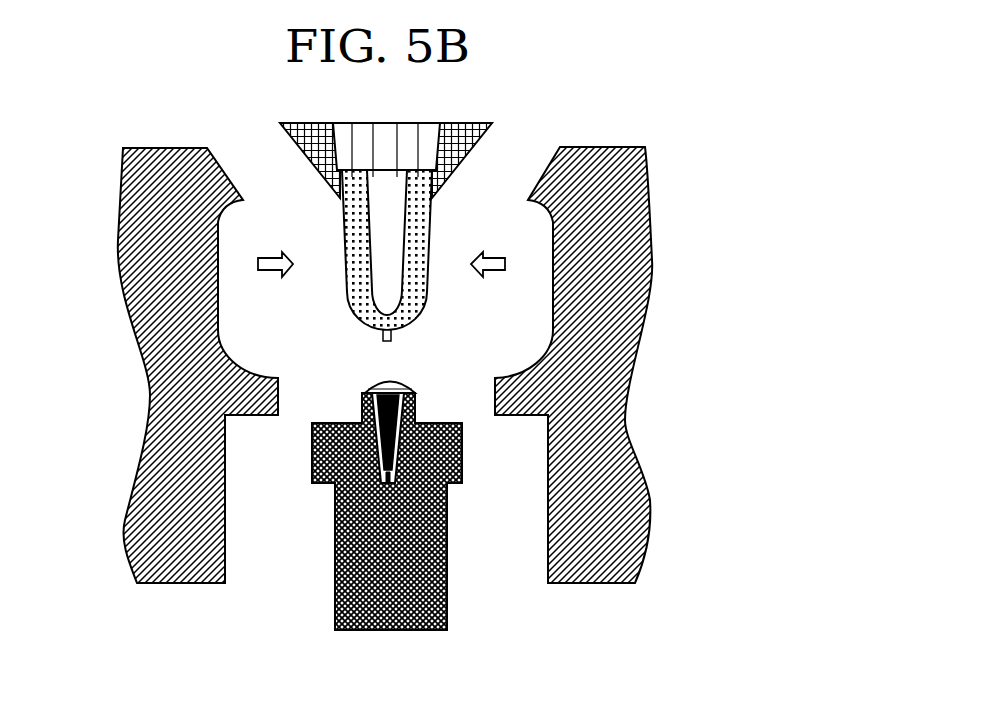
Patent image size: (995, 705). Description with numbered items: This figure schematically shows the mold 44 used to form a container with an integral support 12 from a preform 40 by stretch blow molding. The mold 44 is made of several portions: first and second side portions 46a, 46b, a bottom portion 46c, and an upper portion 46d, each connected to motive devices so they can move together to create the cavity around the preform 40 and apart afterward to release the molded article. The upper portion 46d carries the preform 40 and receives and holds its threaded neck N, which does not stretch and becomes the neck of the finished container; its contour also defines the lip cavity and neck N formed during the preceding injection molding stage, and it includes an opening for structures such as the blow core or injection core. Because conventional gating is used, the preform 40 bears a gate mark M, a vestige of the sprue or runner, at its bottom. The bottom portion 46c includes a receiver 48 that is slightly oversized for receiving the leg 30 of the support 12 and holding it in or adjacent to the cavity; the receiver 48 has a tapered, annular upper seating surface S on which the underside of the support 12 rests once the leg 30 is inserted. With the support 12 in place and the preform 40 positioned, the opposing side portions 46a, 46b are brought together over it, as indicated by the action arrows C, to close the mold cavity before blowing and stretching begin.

The first side portion 46a is at (165, 435).
The second side portion 46b is at (620, 497).
The bottom portion 46c is at (425, 580).
The upper portion 46d is at (298, 147).
The mold 44 is at (702, 213).
The preform 40 is at (418, 240).
The neck N is at (412, 190).
The action arrows C is at (273, 273).
The gate mark M is at (380, 335).
The integral support 12 is at (416, 378).
The leg 30 is at (390, 420).
The tapered upper seating surface S is at (364, 391).
The receiver 48 is at (380, 485).